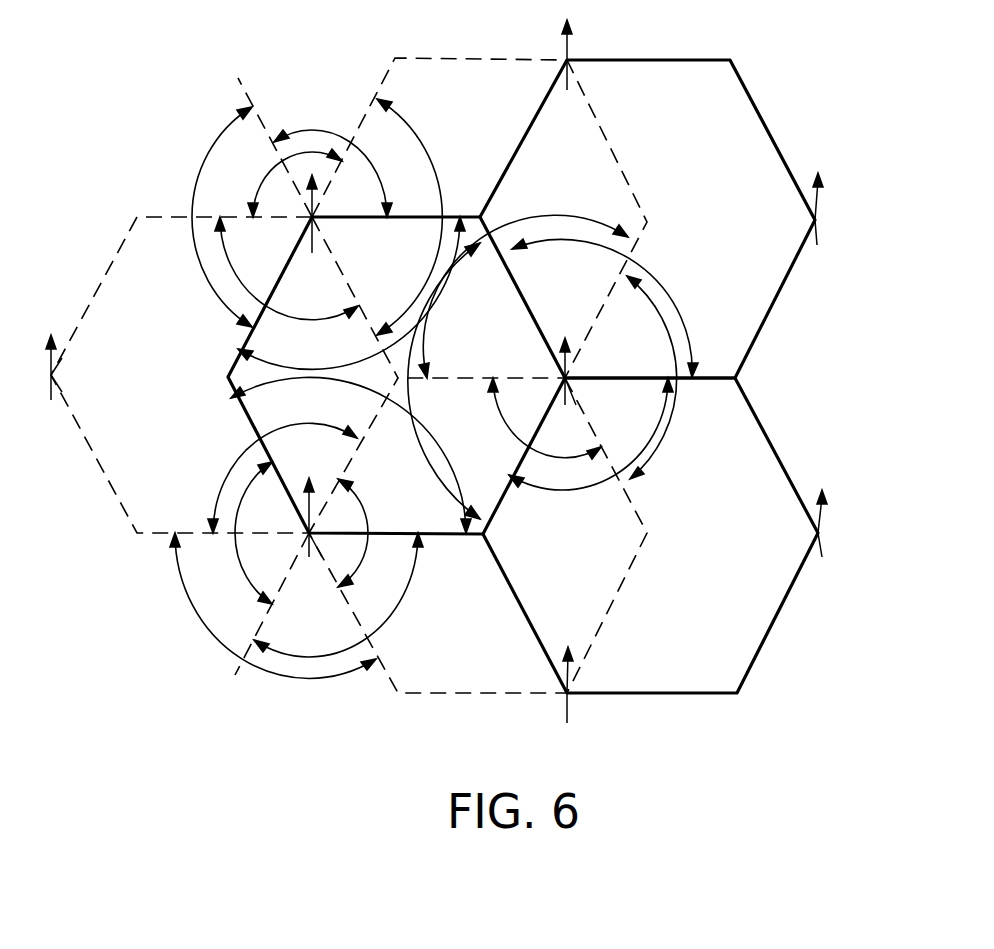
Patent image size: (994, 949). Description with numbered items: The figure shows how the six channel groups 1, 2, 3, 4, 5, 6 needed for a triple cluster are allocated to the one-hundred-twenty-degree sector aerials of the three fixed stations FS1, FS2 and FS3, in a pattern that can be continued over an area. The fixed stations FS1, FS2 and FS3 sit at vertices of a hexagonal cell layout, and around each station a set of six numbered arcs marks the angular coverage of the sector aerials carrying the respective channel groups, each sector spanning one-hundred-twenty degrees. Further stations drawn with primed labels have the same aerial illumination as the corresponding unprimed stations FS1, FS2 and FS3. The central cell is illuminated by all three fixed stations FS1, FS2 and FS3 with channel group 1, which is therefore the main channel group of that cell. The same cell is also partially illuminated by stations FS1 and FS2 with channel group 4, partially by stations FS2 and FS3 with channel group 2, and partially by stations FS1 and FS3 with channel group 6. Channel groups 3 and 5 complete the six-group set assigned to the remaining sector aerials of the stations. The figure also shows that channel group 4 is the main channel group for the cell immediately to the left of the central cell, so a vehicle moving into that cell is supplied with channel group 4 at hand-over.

The channel group 1 is at (355, 375).
The channel group 2 is at (399, 388).
The channel group 3 is at (440, 382).
The channel group 4 is at (451, 375).
The channel group 5 is at (446, 367).
The channel group 6 is at (421, 368).
The fixed station FS1 is at (333, 517).
The fixed station FS2 is at (338, 214).
The fixed station FS3 is at (595, 374).